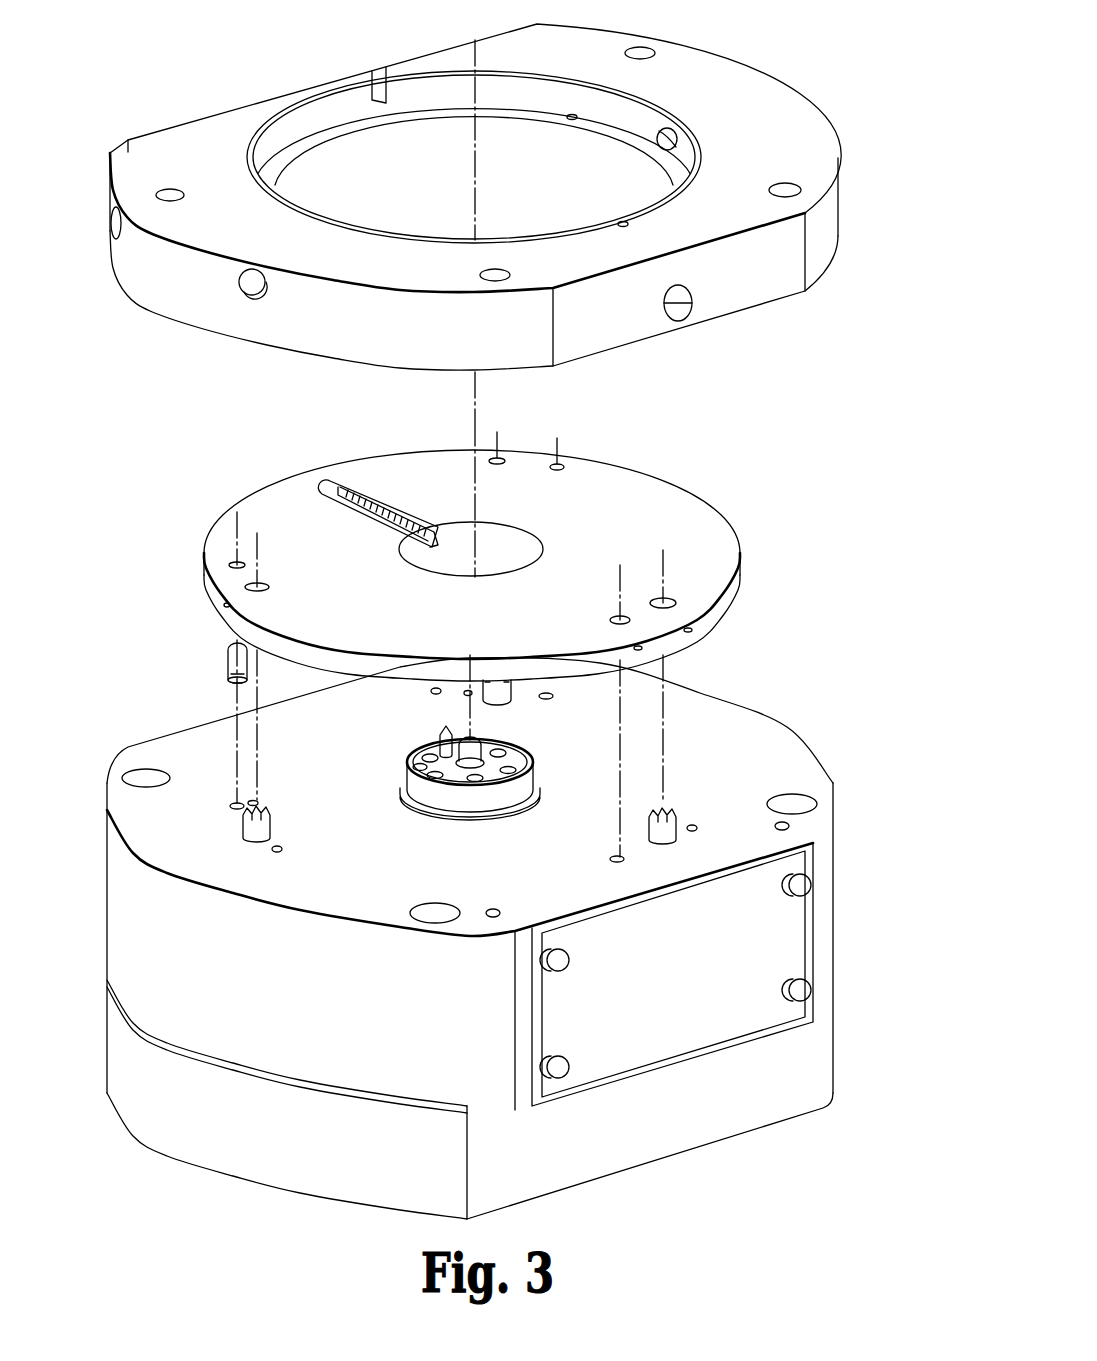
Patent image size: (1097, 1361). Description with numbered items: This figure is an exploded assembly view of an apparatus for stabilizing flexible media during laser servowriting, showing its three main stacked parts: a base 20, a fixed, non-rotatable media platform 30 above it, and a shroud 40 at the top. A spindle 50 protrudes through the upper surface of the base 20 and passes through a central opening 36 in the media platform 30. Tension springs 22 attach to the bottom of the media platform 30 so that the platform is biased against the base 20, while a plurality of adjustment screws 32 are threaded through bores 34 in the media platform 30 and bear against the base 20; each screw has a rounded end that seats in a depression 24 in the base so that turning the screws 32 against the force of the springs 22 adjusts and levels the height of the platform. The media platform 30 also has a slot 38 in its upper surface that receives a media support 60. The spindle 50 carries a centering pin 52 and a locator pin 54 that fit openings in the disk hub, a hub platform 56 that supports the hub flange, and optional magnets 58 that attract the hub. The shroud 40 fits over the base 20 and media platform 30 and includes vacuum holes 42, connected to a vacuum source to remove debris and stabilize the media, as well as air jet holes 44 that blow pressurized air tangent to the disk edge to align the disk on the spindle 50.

The base 20 is at (770, 740).
The tension springs 22 is at (236, 827).
The depression 24 is at (236, 803).
The media platform 30 is at (657, 478).
The adjustment screws 32 is at (226, 661).
The bores 34 is at (238, 563).
The central opening 36 is at (539, 548).
The slot 38 is at (352, 492).
The shroud 40 is at (792, 97).
The vacuum holes 42 is at (126, 258).
The air jet holes 44 is at (667, 128).
The spindle 50 is at (525, 747).
The centering pin 52 is at (473, 744).
The locator pin 54 is at (440, 736).
The hub platform 56 is at (533, 766).
The magnets 58 is at (412, 768).
The media support 60 is at (340, 490).